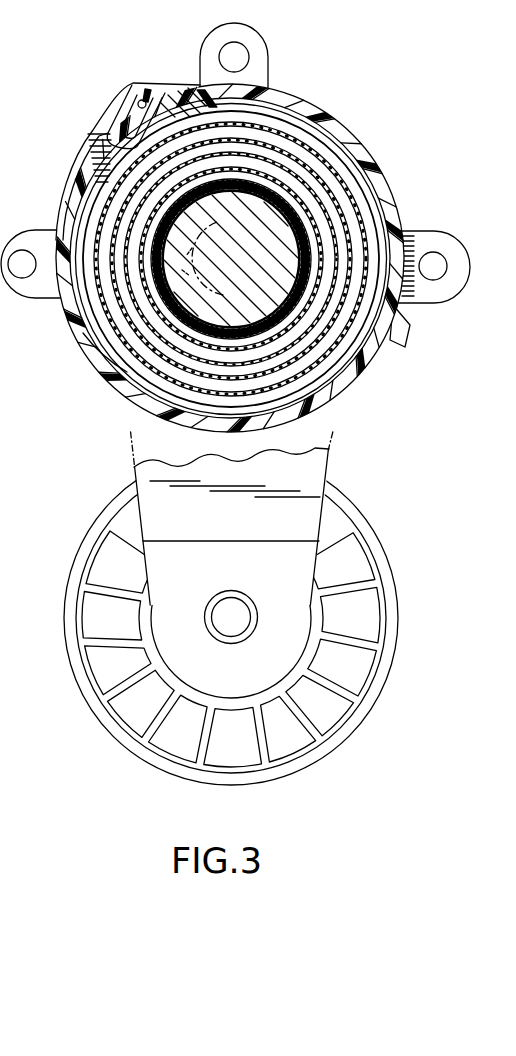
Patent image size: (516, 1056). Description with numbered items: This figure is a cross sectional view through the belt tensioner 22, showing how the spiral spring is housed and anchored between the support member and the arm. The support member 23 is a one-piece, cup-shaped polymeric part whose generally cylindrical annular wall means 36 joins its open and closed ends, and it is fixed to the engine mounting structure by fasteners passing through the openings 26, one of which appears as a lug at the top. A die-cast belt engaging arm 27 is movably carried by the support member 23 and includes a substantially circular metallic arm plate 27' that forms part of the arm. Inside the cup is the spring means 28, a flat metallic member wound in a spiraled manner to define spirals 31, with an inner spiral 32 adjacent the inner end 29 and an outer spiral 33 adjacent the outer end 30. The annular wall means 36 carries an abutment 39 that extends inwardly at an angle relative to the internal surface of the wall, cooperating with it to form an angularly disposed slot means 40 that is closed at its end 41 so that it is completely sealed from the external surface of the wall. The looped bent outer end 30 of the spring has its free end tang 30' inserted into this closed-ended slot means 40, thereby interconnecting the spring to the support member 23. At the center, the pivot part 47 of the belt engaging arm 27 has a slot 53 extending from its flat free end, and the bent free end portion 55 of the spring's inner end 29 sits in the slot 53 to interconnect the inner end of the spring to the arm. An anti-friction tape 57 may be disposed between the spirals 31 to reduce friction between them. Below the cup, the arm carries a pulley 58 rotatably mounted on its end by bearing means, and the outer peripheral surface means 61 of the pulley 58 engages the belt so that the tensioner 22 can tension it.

The belt tensioner 22 is at (392, 106).
The support member 23 is at (370, 163).
The openings 26 is at (250, 42).
The belt engaging arm 27 is at (257, 522).
The arm plate 27' is at (76, 354).
The spring means 28 is at (360, 203).
The inner end 29 is at (167, 262).
The outer end 30 is at (177, 254).
The free end tang 30' is at (117, 96).
The spirals 31 is at (118, 227).
The inner spiral 32 is at (173, 313).
The outer spiral 33 is at (293, 130).
The annular wall means 36 is at (132, 427).
The abutment 39 is at (161, 88).
The slot means 40 is at (120, 118).
The closed end 41 is at (140, 98).
The pivot part 47 is at (290, 250).
The slot 53 is at (190, 246).
The free end portion 55 is at (192, 284).
The anti-friction tape 57 is at (115, 182).
The pulley 58 is at (73, 612).
The outer peripheral surface means 61 is at (334, 748).